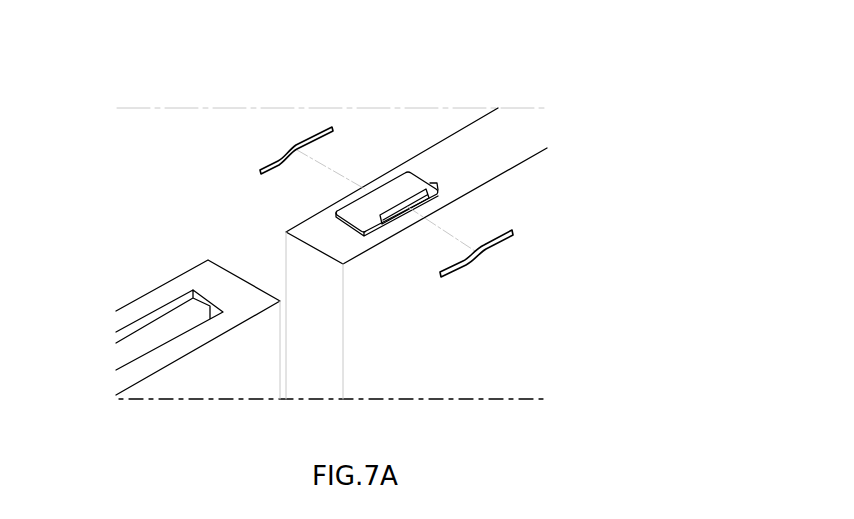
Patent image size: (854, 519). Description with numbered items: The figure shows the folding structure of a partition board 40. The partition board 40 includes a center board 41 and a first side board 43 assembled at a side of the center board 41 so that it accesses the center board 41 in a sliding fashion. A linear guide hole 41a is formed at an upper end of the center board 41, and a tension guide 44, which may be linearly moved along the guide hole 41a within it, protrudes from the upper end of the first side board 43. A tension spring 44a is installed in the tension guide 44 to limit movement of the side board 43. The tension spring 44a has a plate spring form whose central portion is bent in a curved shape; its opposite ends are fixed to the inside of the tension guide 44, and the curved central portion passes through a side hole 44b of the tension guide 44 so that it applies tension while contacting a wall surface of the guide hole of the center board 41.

The partition board 40 is at (209, 174).
The center board 41 is at (180, 333).
The linear guide hole 41a is at (187, 333).
The first side board 43 is at (466, 247).
The tension guide 44 is at (492, 304).
The tension spring 44a is at (480, 253).
The side hole 44b is at (388, 220).